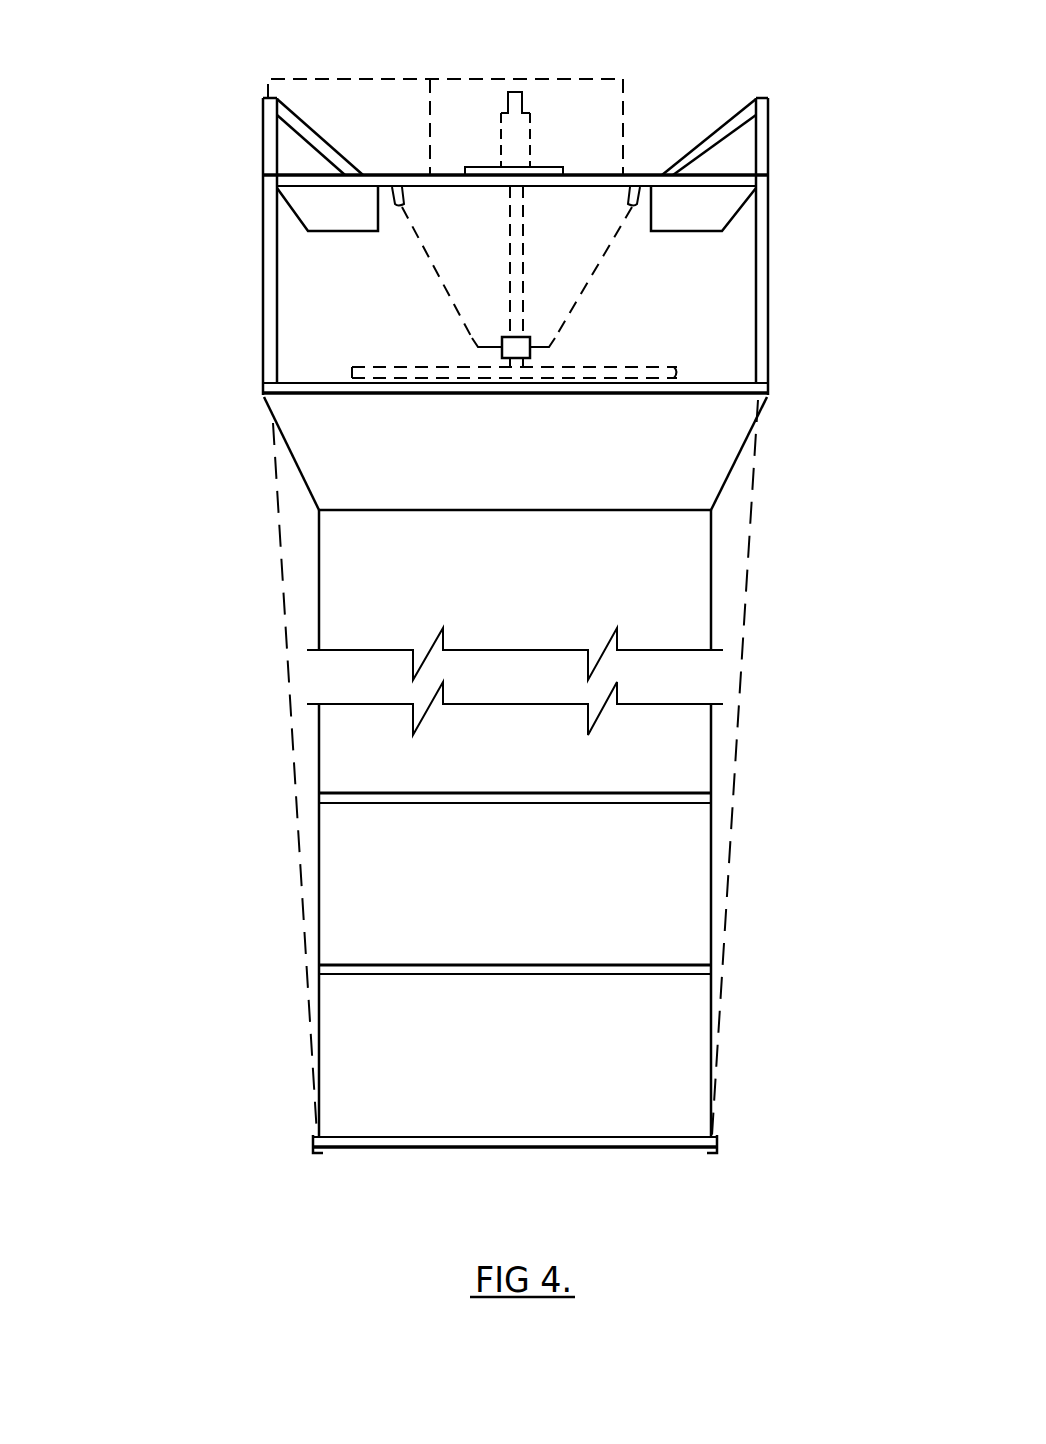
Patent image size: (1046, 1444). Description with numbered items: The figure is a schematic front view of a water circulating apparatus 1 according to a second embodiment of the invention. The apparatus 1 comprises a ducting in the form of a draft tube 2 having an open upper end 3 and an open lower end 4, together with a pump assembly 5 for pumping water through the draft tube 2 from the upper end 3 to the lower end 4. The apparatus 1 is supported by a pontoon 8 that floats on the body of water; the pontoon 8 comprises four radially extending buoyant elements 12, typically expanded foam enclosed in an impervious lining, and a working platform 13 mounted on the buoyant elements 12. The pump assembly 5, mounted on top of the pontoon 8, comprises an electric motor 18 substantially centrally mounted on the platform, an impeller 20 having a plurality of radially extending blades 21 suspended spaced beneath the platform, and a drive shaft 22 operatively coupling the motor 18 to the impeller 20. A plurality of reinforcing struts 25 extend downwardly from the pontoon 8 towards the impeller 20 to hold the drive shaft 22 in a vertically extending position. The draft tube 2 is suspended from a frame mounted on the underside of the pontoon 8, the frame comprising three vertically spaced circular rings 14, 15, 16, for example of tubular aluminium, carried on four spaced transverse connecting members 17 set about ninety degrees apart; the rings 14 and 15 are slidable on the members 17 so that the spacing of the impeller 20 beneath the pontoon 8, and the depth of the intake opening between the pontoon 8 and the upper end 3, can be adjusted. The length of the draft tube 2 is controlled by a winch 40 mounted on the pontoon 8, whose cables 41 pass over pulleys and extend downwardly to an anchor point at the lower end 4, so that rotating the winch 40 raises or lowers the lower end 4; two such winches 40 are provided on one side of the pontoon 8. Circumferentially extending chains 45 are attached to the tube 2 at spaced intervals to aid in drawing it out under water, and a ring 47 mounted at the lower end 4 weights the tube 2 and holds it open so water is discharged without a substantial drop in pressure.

The apparatus 1 is at (184, 359).
The draft tube 2 is at (306, 609).
The upper end 3 is at (263, 398).
The lower end 4 is at (313, 1142).
The pump assembly 5 is at (481, 147).
The pontoon 8 is at (392, 178).
The buoyant elements 12 is at (315, 197).
The working platform 13 is at (626, 175).
The circular ring 14 is at (768, 180).
The circular ring 15 is at (768, 385).
The circular ring 16 is at (711, 508).
The transverse connecting members 17 is at (263, 367).
The electric motor 18 is at (521, 103).
The impeller 20 is at (645, 359).
The blades 21 is at (375, 367).
The drive shaft 22 is at (508, 252).
The reinforcing struts 25 is at (598, 268).
The winch 40 is at (778, 90).
The cables 41 is at (287, 651).
The chains 45 is at (345, 795).
The ring 47 is at (360, 1150).